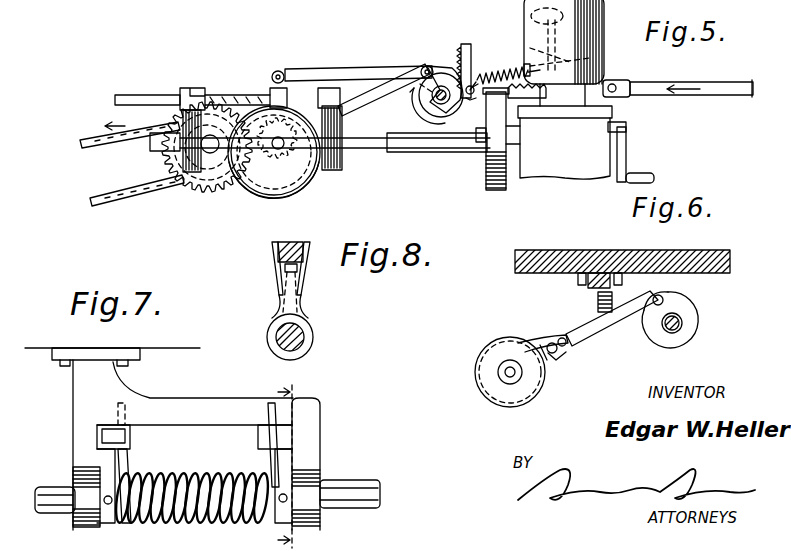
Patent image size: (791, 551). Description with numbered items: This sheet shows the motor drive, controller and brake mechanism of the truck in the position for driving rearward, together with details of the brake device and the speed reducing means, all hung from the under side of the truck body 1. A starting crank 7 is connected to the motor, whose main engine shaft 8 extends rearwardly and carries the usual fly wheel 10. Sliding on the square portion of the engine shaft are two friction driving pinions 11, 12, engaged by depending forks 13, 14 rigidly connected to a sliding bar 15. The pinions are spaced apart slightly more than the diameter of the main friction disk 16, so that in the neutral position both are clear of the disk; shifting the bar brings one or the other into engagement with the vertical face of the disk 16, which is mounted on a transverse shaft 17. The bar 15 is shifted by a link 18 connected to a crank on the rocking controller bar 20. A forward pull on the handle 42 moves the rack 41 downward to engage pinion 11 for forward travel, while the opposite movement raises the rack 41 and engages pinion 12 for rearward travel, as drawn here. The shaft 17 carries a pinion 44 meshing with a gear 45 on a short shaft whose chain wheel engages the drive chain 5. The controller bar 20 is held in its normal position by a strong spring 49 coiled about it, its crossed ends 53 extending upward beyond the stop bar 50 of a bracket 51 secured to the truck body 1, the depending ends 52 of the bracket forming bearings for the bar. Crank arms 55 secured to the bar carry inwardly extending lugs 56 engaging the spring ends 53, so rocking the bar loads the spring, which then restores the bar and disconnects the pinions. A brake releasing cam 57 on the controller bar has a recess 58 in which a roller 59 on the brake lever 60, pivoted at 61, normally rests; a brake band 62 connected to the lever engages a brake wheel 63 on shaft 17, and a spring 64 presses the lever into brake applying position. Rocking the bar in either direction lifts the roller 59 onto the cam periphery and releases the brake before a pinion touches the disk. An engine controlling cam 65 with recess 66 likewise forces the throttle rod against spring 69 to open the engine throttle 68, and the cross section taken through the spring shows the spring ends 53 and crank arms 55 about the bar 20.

In FIG. 6, the supporting frame bar 1 is at (558, 252).
In FIG. 5, the drive chain 5 is at (90, 140).
In FIG. 5, the starting crank 7 is at (626, 158).
In FIG. 7, the main engine shaft 8 is at (296, 458).
In FIG. 5, the fly wheel 10 is at (486, 172).
In FIG. 5, the friction driving pinion 11 is at (190, 175).
In FIG. 5, the friction driving pinion 12 is at (334, 171).
In FIG. 5, the depending fork 13 is at (192, 88).
In FIG. 5, the depending fork 14 is at (312, 70).
In FIG. 5, the sliding bar 15 is at (147, 96).
In FIG. 5, the main friction disk 16 is at (270, 188).
In FIG. 6, the shaft 17 is at (498, 373).
In FIG. 5, the link 18 is at (338, 80).
In FIG. 8, the controller bar 20 is at (313, 338).
In FIG. 7, the controller bar 20 is at (350, 486).
In FIG. 6, the controller bar 20 is at (676, 333).
In FIG. 5, the rack 41 is at (467, 42).
In FIG. 5, the handle 42 is at (718, 75).
In FIG. 5, the pinion 44 is at (272, 92).
In FIG. 5, the gear 45 is at (220, 196).
In FIG. 8, the spring 49 is at (270, 338).
In FIG. 7, the spring 49 is at (212, 523).
In FIG. 5, the stop bar 50 is at (296, 200).
In FIG. 7, the stop bar 50 is at (197, 396).
In FIG. 7, the bracket 51 is at (80, 395).
In FIG. 7, the depending ends 52 is at (75, 457).
In FIG. 8, the spring ends 53 is at (272, 249).
In FIG. 7, the spring ends 53 is at (122, 468).
In FIG. 8, the crank arm 55 is at (283, 288).
In FIG. 7, the crank arm 55 is at (105, 470).
In FIG. 7, the lug 56 is at (97, 430).
In FIG. 5, the brake releasing cam 57 is at (449, 118).
In FIG. 6, the brake releasing cam 57 is at (700, 318).
In FIG. 5, the recess 58 is at (428, 67).
In FIG. 6, the recess 58 is at (664, 294).
In FIG. 5, the roller 59 is at (420, 88).
In FIG. 6, the roller 59 is at (645, 316).
In FIG. 5, the brake lever 60 is at (358, 90).
In FIG. 6, the brake lever 60 is at (588, 326).
In FIG. 6, the pivot 61 is at (560, 352).
In FIG. 6, the brake band 62 is at (533, 340).
In FIG. 6, the brake wheel 63 is at (496, 350).
In FIG. 6, the spring 64 is at (607, 263).
In FIG. 5, the engine controlling cam 65 is at (432, 110).
In FIG. 5, the recess 66 is at (460, 50).
In FIG. 5, the engine throttle 68 is at (600, 62).
In FIG. 5, the spring 69 is at (497, 67).